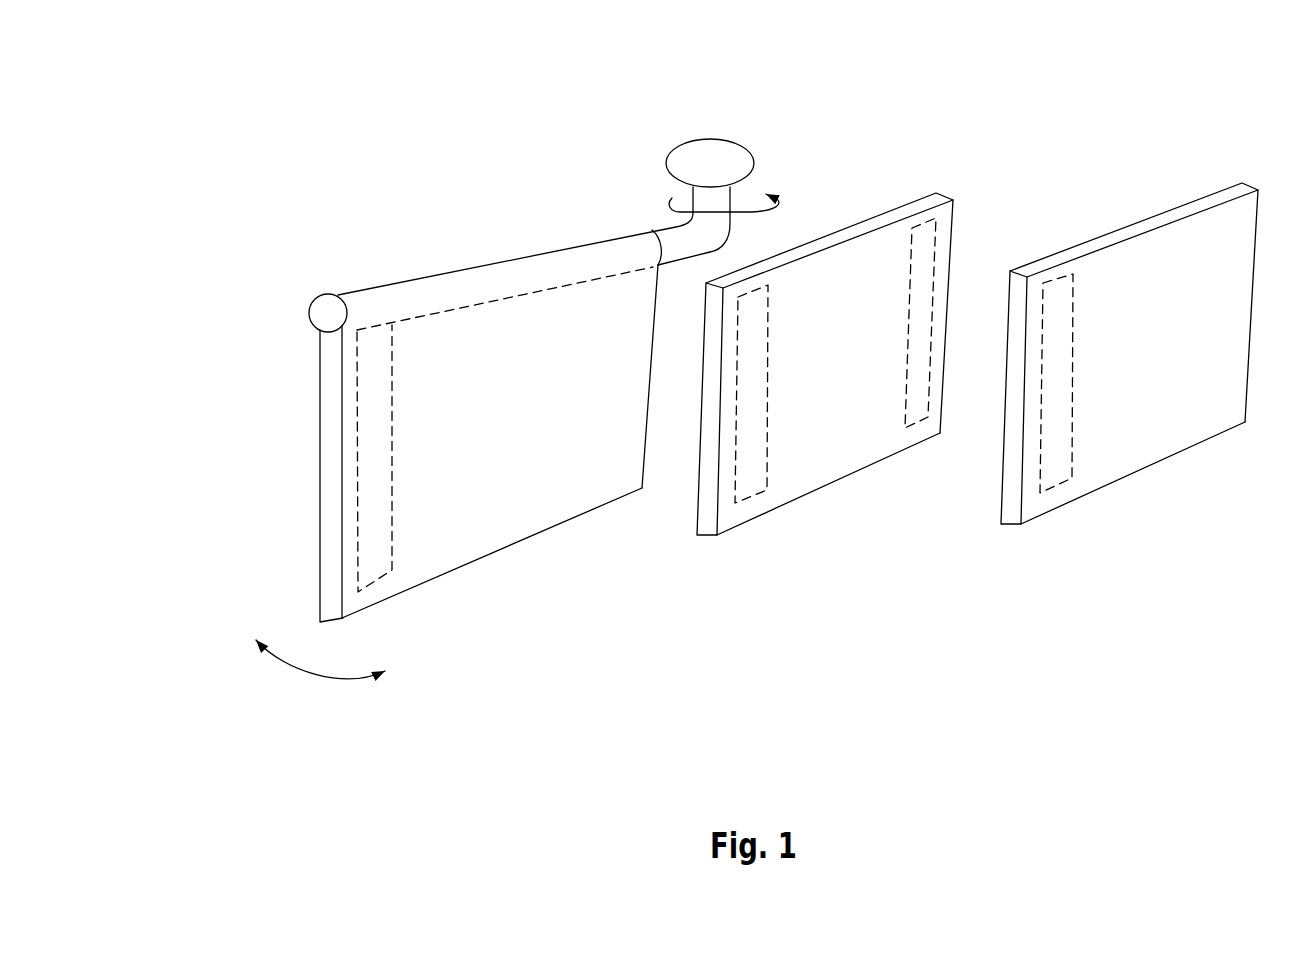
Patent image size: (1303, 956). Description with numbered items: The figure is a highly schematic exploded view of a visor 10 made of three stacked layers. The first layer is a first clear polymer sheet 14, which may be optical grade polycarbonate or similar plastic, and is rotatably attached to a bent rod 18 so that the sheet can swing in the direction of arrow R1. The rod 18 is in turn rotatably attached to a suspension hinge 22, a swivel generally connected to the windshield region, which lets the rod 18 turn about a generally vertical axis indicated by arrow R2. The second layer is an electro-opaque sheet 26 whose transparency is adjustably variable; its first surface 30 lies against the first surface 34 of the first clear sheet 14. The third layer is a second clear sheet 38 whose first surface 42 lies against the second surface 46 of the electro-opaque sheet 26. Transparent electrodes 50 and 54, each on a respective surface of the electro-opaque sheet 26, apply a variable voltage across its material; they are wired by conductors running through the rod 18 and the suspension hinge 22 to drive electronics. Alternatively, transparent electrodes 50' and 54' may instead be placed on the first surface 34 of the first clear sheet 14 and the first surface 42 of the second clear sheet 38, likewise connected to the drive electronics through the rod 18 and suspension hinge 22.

The visor 10 is at (1233, 111).
The first clear polymer sheet 14 is at (508, 566).
The rod 18 is at (668, 226).
The suspension hinge 22 is at (767, 162).
The electro-opaque sheet 26 is at (774, 518).
The first surface of the electro-opaque sheet 30 is at (882, 270).
The first surface of the first clear sheet 34 is at (575, 483).
The second clear sheet 38 is at (1012, 536).
The first surface of the second clear sheet 42 is at (997, 465).
The second surface of the electro-opaque sheet 46 is at (831, 458).
The transparent electrode 50 is at (716, 435).
The transparent electrode 50' is at (306, 458).
The transparent electrode 54 is at (972, 310).
The transparent electrode 54' is at (1093, 327).
The arrow R1 is at (320, 677).
The arrow R2 is at (749, 196).